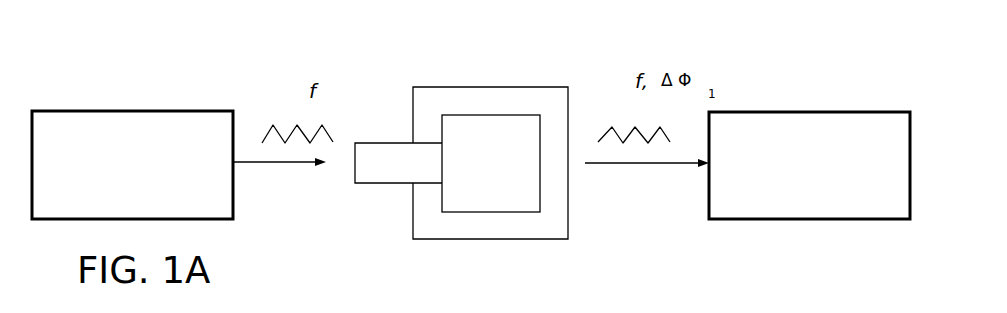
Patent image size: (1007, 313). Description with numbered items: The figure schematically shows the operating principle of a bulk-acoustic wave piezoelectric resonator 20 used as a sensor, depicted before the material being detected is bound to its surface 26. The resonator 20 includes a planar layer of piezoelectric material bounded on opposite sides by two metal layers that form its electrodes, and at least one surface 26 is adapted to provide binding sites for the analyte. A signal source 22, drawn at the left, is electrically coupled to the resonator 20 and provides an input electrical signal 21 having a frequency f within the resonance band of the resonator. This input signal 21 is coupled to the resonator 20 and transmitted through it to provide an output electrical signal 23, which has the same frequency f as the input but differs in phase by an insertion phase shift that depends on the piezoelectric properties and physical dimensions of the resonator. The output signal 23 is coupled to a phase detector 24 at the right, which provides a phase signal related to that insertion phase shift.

The bulk-acoustic wave piezoelectric resonator 20 is at (482, 137).
The input electrical signal 21 is at (262, 138).
The signal source 22 is at (133, 110).
The output electrical signal 23 is at (598, 138).
The phase detector 24 is at (807, 220).
The surface 26 is at (542, 180).